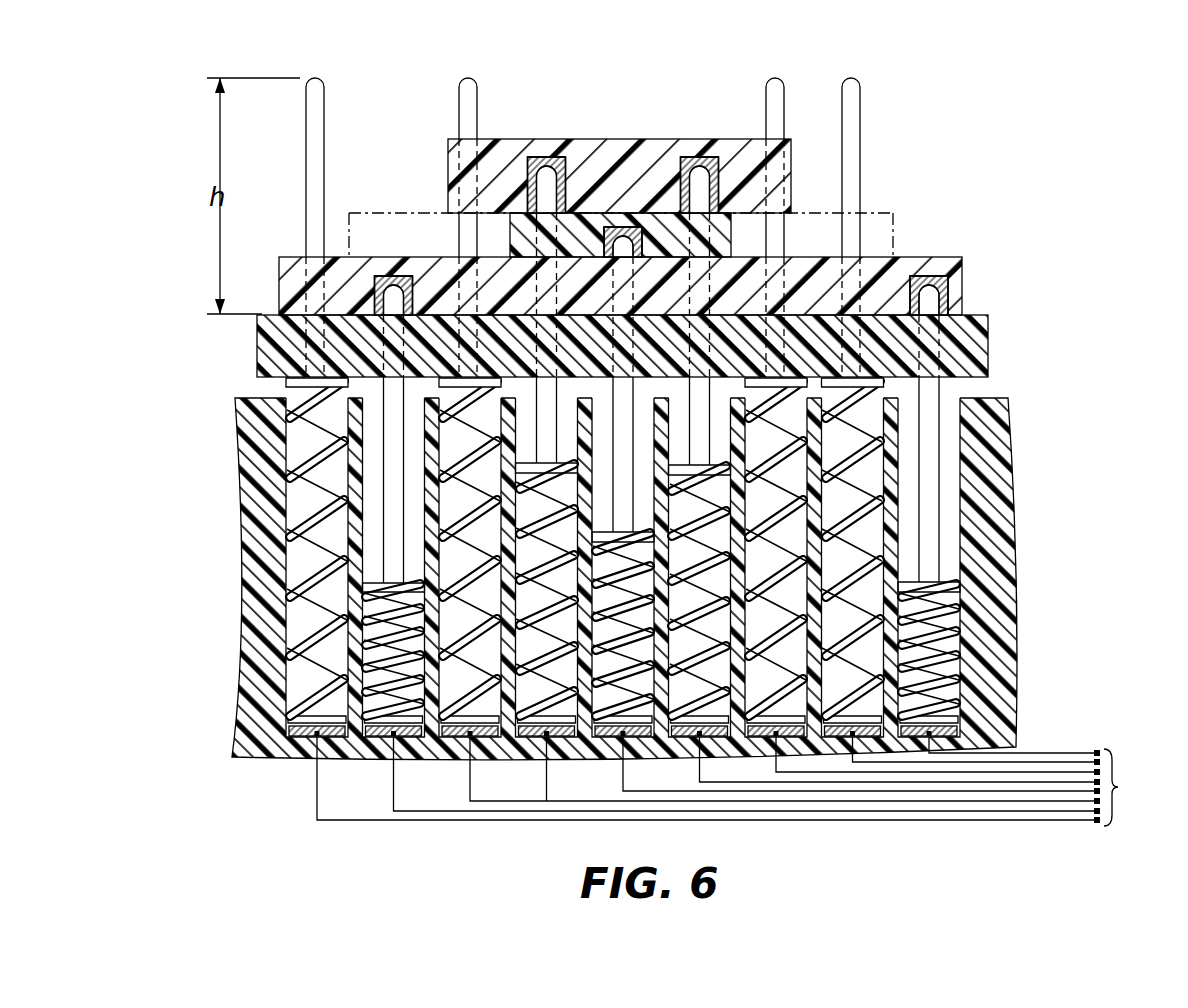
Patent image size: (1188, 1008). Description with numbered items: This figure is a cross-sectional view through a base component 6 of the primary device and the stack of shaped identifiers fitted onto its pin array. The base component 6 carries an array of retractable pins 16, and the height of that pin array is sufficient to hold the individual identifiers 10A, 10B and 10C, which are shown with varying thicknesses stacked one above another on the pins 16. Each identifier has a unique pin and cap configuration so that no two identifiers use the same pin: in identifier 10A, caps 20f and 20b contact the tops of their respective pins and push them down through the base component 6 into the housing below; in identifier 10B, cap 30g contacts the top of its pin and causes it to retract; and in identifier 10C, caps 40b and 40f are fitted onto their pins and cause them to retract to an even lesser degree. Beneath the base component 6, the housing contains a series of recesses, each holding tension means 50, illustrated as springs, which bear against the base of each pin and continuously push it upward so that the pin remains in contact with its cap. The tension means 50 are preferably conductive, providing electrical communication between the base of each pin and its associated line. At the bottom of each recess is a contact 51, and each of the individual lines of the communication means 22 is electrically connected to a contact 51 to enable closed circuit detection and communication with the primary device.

The base component 6 is at (990, 340).
The identifier 10A is at (962, 290).
The identifier 10B is at (893, 232).
The identifier 10C is at (448, 168).
The retractable pins 16 is at (312, 77).
The cap 20f is at (390, 276).
The cap 20b is at (932, 274).
The cap 40b is at (546, 156).
The cap 40f is at (710, 157).
The cap 30g is at (630, 227).
The tension means 50 is at (393, 590).
The contact 51 is at (348, 742).
The communication means 22 is at (1170, 800).